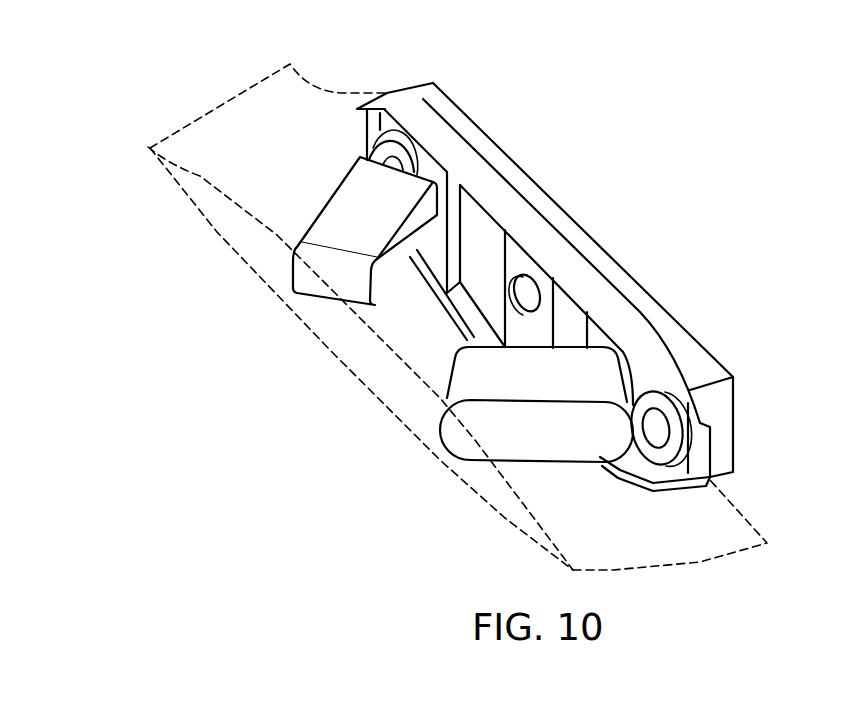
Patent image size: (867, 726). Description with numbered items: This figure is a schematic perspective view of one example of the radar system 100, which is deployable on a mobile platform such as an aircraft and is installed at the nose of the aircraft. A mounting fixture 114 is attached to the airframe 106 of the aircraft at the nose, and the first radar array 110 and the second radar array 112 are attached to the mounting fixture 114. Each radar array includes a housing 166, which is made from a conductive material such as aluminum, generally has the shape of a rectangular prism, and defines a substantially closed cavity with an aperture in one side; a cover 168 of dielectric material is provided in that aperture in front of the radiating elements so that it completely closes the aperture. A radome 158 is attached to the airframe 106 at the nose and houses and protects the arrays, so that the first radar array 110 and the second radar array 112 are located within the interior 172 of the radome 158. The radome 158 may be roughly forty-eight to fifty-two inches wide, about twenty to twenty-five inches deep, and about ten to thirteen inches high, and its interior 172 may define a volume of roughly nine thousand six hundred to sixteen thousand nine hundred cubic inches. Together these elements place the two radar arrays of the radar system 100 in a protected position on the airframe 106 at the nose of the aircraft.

The radar system 100 is at (128, 95).
The airframe 106 is at (587, 247).
The first radar array 110 is at (456, 499).
The second radar array 112 is at (296, 324).
The mounting fixture 114 is at (418, 113).
The radome 158 is at (187, 197).
The housing 166 is at (457, 363).
The cover 168 is at (325, 205).
The interior 172 is at (252, 149).